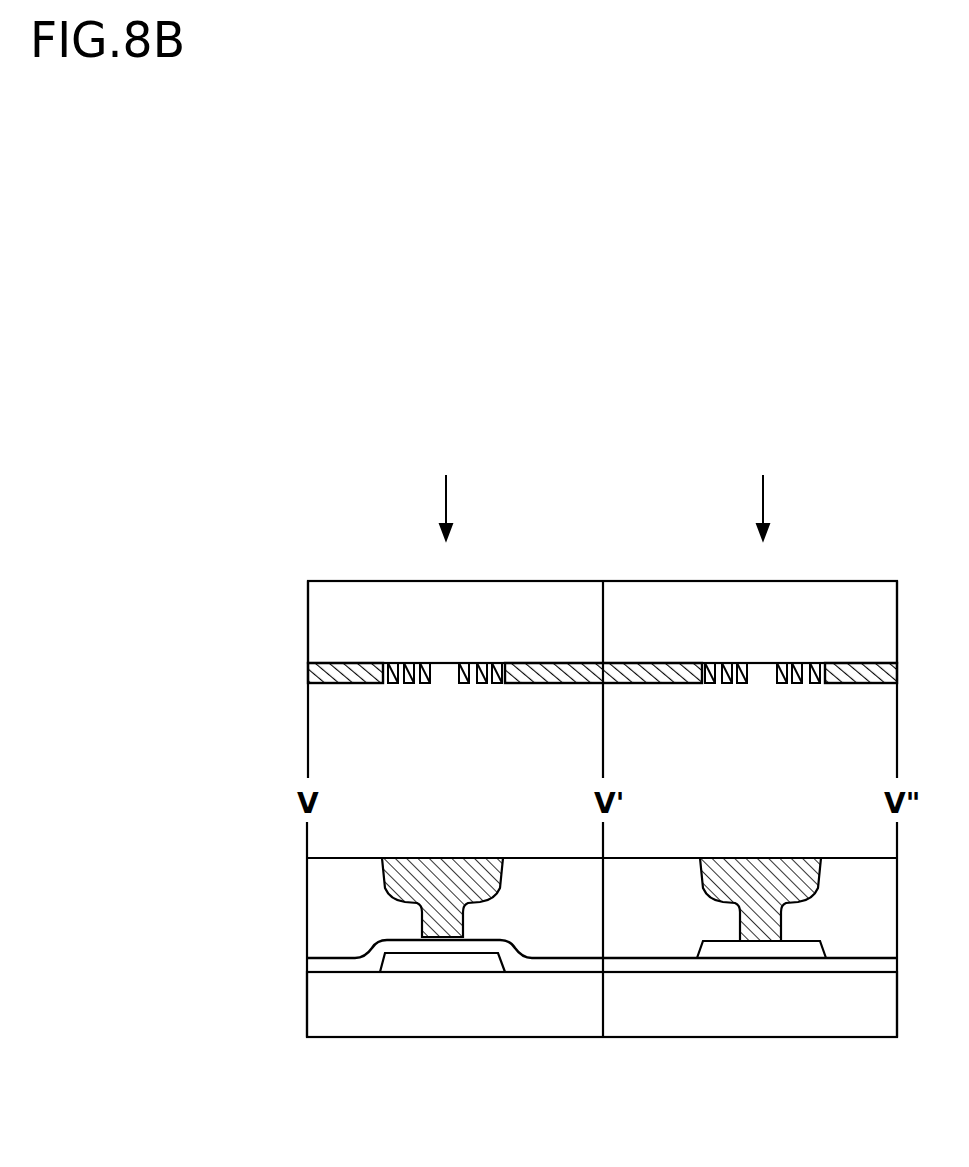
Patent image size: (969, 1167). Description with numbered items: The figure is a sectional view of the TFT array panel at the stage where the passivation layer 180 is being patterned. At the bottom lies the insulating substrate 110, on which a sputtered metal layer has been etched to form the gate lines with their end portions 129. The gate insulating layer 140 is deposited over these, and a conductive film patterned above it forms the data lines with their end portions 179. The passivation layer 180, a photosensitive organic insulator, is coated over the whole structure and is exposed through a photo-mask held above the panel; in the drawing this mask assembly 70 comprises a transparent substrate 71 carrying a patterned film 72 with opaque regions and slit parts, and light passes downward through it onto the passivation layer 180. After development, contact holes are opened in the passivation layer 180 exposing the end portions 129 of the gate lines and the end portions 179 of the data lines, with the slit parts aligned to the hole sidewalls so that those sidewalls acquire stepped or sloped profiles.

The encapsulation member 70 is at (602, 644).
The encapsulation substrate 71 is at (862, 585).
The color filter layer 72 is at (355, 663).
The insulating substrate 110 is at (632, 1020).
The end portions of the gate lines 129 is at (452, 958).
The gate insulating layer 140 is at (555, 972).
The end portions of the data lines 179 is at (763, 950).
The passivation layer 180 is at (639, 933).